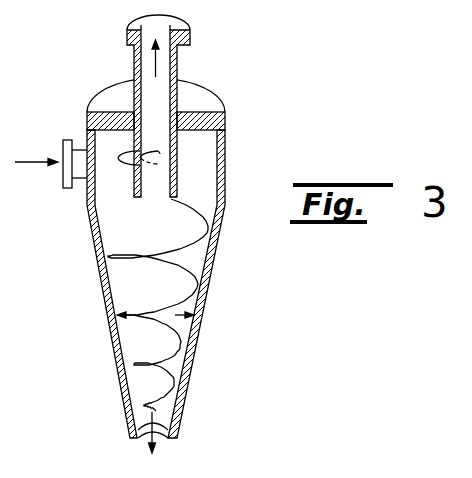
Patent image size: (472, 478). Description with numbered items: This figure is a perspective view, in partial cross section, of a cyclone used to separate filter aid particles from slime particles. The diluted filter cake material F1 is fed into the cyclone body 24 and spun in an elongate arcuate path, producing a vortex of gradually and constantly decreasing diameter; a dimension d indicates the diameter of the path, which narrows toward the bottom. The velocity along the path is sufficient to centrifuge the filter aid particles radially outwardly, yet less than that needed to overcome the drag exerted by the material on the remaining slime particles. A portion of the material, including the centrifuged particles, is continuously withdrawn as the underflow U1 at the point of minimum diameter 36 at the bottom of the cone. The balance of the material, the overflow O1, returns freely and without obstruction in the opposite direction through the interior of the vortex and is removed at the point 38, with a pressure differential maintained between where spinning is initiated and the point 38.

The cyclone separator body 24 is at (96, 249).
The point where the balance of the material is removed 38 is at (178, 198).
The point of minimum diameter 36 is at (133, 439).
The overflow O1 is at (187, 28).
The material fed to the cyclone F1 is at (51, 163).
The underflow U1 is at (168, 436).
The diameter dimension d is at (155, 315).